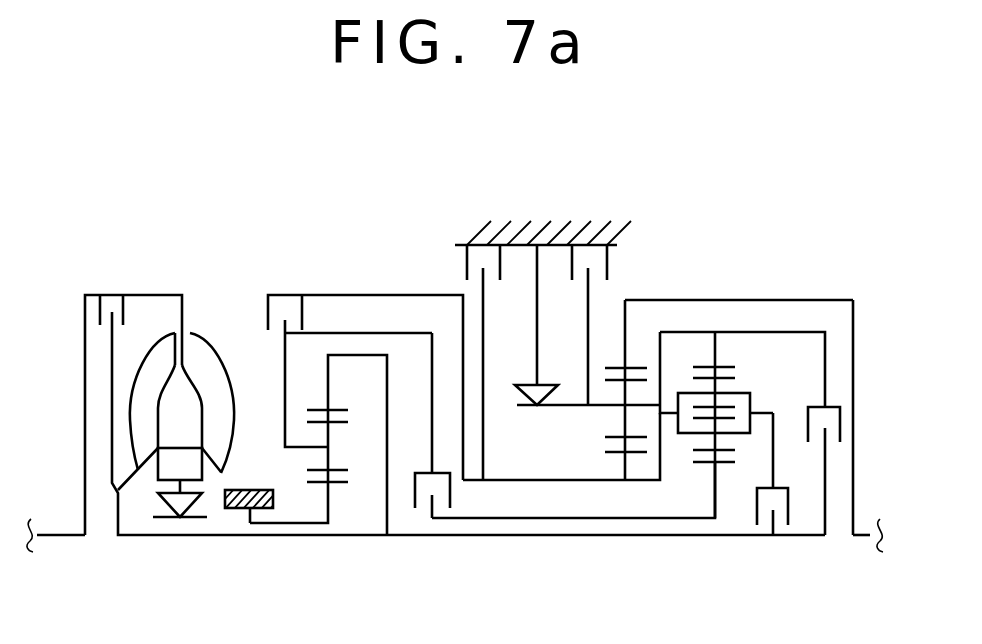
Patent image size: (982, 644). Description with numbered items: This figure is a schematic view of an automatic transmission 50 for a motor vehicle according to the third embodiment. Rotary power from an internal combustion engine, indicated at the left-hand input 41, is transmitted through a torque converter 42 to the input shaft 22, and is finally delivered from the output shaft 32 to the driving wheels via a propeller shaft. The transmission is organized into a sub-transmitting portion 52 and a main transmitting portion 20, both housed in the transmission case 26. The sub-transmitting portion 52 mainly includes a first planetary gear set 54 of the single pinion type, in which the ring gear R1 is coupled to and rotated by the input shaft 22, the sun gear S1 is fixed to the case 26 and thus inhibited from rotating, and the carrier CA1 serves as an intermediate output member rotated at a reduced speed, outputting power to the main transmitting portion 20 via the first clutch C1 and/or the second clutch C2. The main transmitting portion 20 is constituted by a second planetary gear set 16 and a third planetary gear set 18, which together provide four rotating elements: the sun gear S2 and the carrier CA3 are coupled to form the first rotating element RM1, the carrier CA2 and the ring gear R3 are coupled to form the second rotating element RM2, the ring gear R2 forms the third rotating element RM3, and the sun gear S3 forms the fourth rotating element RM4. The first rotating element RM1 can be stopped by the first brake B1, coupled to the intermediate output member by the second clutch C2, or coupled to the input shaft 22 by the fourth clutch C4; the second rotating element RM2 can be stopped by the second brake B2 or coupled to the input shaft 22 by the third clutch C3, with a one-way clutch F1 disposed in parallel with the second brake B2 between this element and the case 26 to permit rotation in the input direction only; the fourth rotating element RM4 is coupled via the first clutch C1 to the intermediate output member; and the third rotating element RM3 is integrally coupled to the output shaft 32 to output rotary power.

The automatic transmission 50 is at (827, 218).
The torque converter 42 is at (160, 279).
The engine 41 is at (53, 537).
The input shaft 22 is at (213, 535).
The sub-transmitting portion 52 is at (318, 546).
The first planetary gear set 54 is at (331, 340).
The transmission case 26 is at (247, 488).
The main transmitting portion 20 is at (441, 268).
The third planetary gear set 18 is at (714, 321).
The second planetary gear set 16 is at (606, 515).
The output shaft 32 is at (870, 535).
The first clutch C1 is at (421, 425).
The second clutch C2 is at (362, 371).
The third clutch C3 is at (807, 454).
The fourth clutch C4 is at (787, 474).
The first brake B1 is at (476, 232).
The second brake B2 is at (593, 232).
The one-way clutch F1 is at (525, 325).
The ring gear R1 is at (332, 407).
The ring gear R2 is at (640, 365).
The ring gear R3 is at (722, 367).
The sun gear S1 is at (333, 487).
The sun gear S2 is at (634, 455).
The sun gear S3 is at (703, 460).
The carrier CA1 is at (284, 395).
The carrier CA2 is at (570, 407).
The carrier CA3 is at (745, 435).
The first rotating element RM1 is at (602, 480).
The second rotating element RM2 is at (728, 332).
The third rotating element RM3 is at (750, 300).
The fourth rotating element RM4 is at (532, 520).